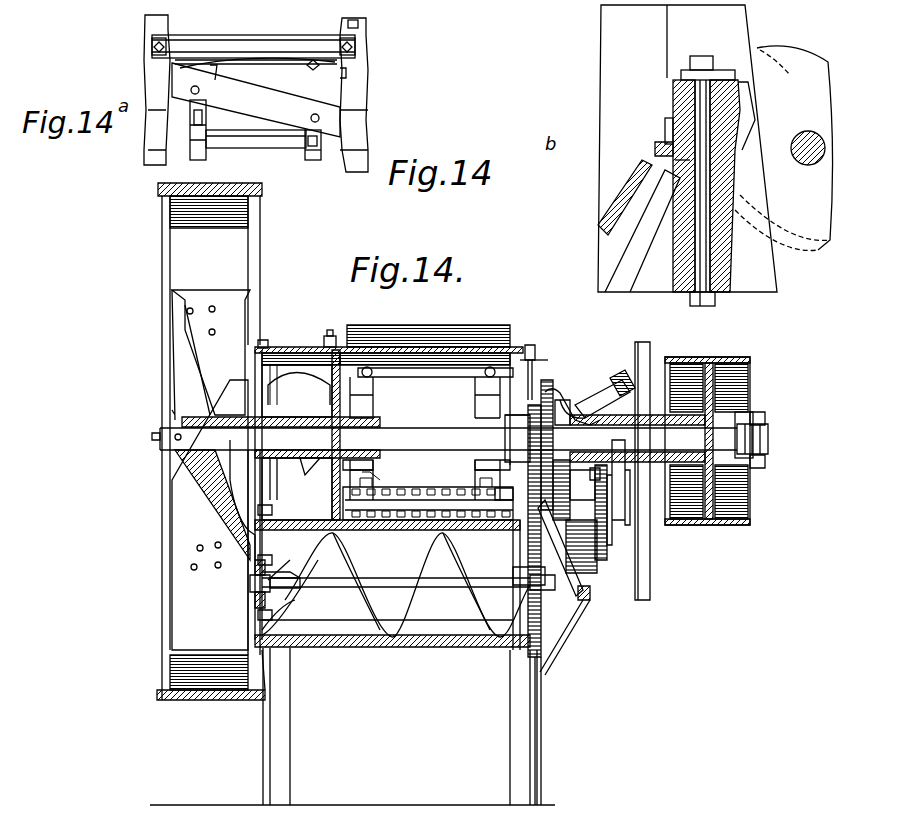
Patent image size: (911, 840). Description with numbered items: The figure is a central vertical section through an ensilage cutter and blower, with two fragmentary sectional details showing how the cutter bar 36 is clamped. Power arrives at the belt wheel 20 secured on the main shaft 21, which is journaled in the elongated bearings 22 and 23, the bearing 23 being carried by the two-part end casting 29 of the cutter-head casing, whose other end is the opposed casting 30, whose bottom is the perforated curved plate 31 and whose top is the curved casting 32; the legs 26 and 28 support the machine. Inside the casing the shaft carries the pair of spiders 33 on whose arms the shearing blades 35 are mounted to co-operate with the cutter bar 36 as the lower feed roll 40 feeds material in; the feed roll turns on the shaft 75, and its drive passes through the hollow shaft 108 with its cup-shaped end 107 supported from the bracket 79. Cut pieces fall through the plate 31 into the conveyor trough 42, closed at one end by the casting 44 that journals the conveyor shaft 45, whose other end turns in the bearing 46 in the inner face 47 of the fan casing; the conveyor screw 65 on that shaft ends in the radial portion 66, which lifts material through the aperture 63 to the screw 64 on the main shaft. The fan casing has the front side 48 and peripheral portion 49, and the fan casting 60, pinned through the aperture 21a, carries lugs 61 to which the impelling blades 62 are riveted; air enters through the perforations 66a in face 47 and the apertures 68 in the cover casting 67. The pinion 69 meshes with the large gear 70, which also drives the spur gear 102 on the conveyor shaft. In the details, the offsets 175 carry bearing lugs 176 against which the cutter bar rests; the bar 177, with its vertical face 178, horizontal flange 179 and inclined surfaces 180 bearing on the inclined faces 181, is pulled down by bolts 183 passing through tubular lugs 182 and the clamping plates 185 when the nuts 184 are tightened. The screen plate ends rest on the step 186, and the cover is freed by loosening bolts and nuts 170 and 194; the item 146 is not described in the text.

In FIG. 14, the belt wheel 20 is at (705, 357).
In FIG. 14A, the shaft 21 is at (266, 142).
In FIG. 14, the shaft 21 is at (412, 448).
In FIG. 14, the aperture 21a is at (170, 436).
In FIG. 14, the elongated bearing 22 is at (595, 400).
In FIG. 14, the elongated bearing 23 is at (325, 463).
In FIG. 14, the leg 26 is at (512, 710).
In FIG. 14, the leg 28 is at (290, 730).
In FIG. 14, the two-part end casting 29 is at (335, 503).
In FIG. 14, the two-part end casting 30 is at (515, 522).
In FIG. 14B, the perforated curved plate 31 is at (603, 213).
In FIG. 14, the perforated curved plate 31 is at (422, 528).
In FIG. 14, the curved casting 32 is at (375, 347).
In FIG. 14A, the end casting or spider 33 is at (300, 152).
In FIG. 14, the end casting or spider 33 is at (470, 458).
In FIG. 14A, the shearing blade 35 is at (262, 98).
In FIG. 14, the shearing blade 35 is at (415, 370).
In FIG. 14A, the cutter bar 36 is at (238, 45).
In FIG. 14B, the cutter bar 36 is at (672, 98).
In FIG. 14, the cutter bar 36 is at (430, 460).
In FIG. 14B, the lower feed roll 40 is at (815, 248).
In FIG. 14, the conveyor trough 42 is at (425, 645).
In FIG. 14, the casting 44 is at (512, 565).
In FIG. 14, the conveyor shaft 45 is at (450, 583).
In FIG. 14, the bearing 46 is at (270, 575).
In FIG. 14, the inner face of fan-wheel casing 47 is at (262, 628).
In FIG. 14, the front side of fan casing 48 is at (165, 527).
In FIG. 14, the peripheral portion of fan casing 49 is at (220, 700).
In FIG. 14, the fan casting 60 is at (195, 480).
In FIG. 14, the attaching lug 61 is at (195, 545).
In FIG. 14, the impelling blade 62 is at (180, 605).
In FIG. 14, the aperture 63 is at (262, 540).
In FIG. 14, the screw 64 is at (297, 391).
In FIG. 14, the conveyor screw 65 is at (360, 560).
In FIG. 14, the radially extending portion 66 is at (290, 588).
In FIG. 14, the perforation 66a is at (262, 320).
In FIG. 14, the cover casting 67 is at (272, 348).
In FIG. 14, the aperture 68 is at (296, 348).
In FIG. 14, the spur gear pinion 69 is at (548, 415).
In FIG. 14, the large gear 70 is at (530, 510).
In FIG. 14B, the shaft of lower feed roll 75 is at (807, 162).
In FIG. 14, the bracket 79 is at (643, 342).
In FIG. 14, the large spur gear wheel 102 is at (560, 612).
In FIG. 14, the cup-shaped end 107 is at (612, 378).
In FIG. 14, the hollow shaft 108 is at (598, 395).
In FIG. 14A, the post fitting 146 is at (343, 72).
In FIG. 14, the bolt and nut 170 is at (538, 365).
In FIG. 14B, the offset 175 is at (667, 24).
In FIG. 14B, the bearing lug 176 is at (672, 107).
In FIG. 14B, the bar 177 is at (715, 88).
In FIG. 14B, the vertical face 178 is at (672, 120).
In FIG. 14A, the horizontal flange 179 is at (270, 58).
In FIG. 14B, the horizontal flange 179 is at (665, 140).
In FIG. 14B, the inclined surface 180 is at (722, 106).
In FIG. 14B, the inclined face 181 is at (716, 125).
In FIG. 14B, the tubular lug 182 is at (695, 262).
In FIG. 14A, the bolt 183 is at (362, 48).
In FIG. 14B, the bolt 183 is at (700, 272).
In FIG. 14B, the nut 184 is at (716, 298).
In FIG. 14A, the clamping or equalizing plate 185 is at (360, 40).
In FIG. 14B, the clamping or equalizing plate 185 is at (719, 72).
In FIG. 14, the offset or step 186 is at (465, 545).
In FIG. 14, the bolt and nut 194 is at (331, 338).